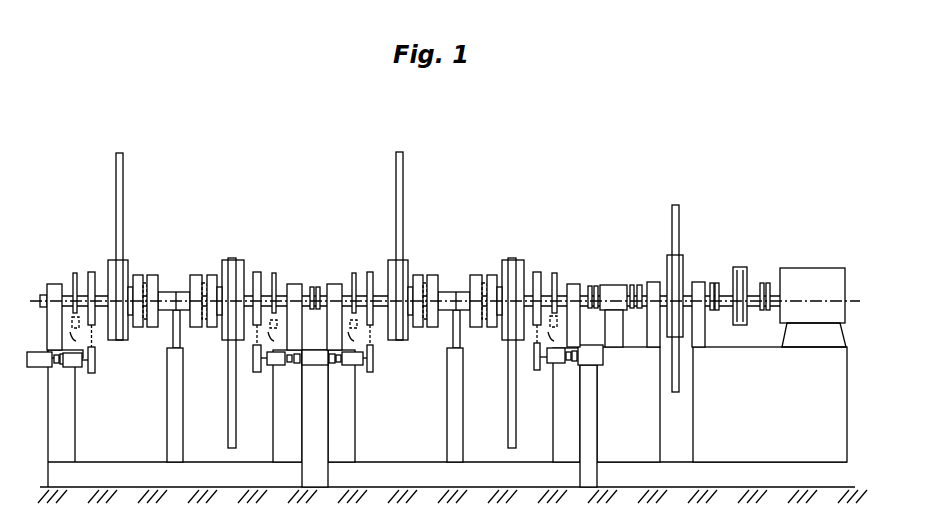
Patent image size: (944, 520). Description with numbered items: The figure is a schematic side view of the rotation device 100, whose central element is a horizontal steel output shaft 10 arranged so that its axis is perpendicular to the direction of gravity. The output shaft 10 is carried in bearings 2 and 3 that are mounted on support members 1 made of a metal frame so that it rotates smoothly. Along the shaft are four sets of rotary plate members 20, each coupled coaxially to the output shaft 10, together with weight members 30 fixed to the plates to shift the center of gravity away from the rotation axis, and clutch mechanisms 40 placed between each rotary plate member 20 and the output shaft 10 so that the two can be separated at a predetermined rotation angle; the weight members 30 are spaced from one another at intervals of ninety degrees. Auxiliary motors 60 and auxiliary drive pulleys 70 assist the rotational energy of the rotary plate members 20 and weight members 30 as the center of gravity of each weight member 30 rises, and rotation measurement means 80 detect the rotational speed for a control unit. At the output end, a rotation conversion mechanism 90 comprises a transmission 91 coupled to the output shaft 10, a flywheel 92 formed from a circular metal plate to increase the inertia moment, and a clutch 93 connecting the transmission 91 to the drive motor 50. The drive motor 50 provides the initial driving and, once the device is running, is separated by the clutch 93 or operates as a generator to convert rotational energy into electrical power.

The support member 1 is at (78, 411).
The bearing 2 is at (55, 283).
The bearing 3 is at (176, 292).
The output shaft 10 is at (308, 287).
The rotary plate member 20 is at (126, 261).
The weight member 30 is at (122, 174).
The clutch mechanism 40 is at (210, 276).
The drive motor 50 is at (802, 267).
The auxiliary motor 60 is at (37, 366).
The auxiliary drive pulley 70 is at (91, 271).
The rotation measurement means 80 is at (74, 273).
The rotation conversion mechanism 90 is at (640, 239).
The transmission 91 is at (613, 283).
The flywheel 92 is at (680, 229).
The clutch 93 is at (739, 266).
The rotation device 100 is at (504, 140).